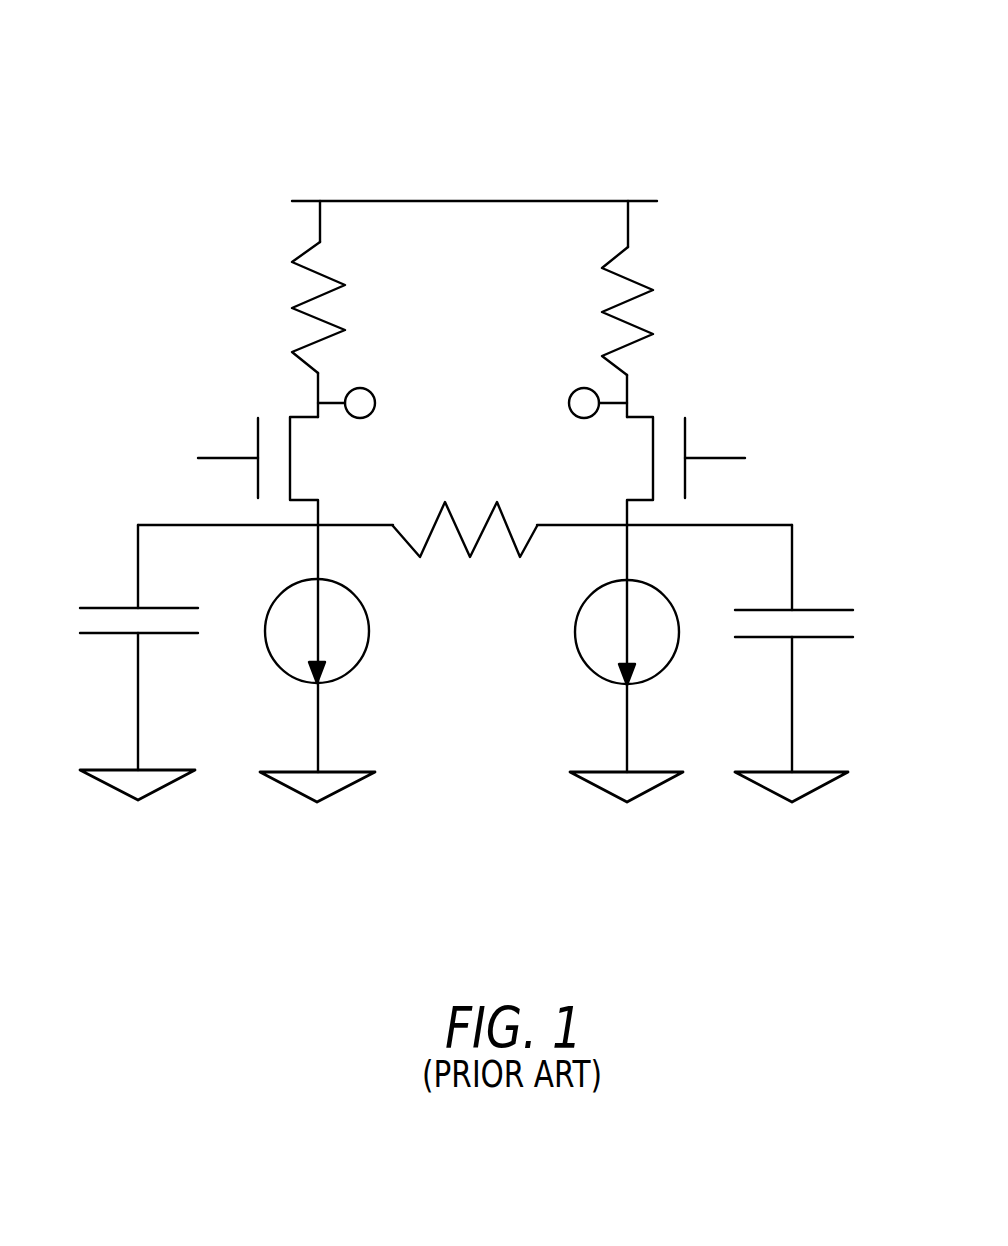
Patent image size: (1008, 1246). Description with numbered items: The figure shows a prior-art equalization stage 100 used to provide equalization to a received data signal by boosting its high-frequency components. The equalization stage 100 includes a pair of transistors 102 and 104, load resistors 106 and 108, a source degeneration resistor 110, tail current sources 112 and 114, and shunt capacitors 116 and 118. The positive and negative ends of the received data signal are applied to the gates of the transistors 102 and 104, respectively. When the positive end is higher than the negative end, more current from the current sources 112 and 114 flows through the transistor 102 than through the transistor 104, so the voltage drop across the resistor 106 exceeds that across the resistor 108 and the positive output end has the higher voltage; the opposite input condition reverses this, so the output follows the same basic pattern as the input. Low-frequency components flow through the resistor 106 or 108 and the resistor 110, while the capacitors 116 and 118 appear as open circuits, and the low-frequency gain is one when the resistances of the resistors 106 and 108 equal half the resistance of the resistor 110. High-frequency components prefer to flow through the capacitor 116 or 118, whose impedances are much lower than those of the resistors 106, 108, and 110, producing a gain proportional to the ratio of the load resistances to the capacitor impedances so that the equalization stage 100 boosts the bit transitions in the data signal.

The equalization stage 100 is at (512, 48).
The transistor 102 is at (302, 415).
The transistor 104 is at (685, 418).
The load resistor 106 is at (343, 290).
The load resistor 108 is at (645, 280).
The source degeneration resistor 110 is at (447, 500).
The tail current source 112 is at (372, 645).
The tail current source 114 is at (668, 598).
The shunt capacitor 116 is at (122, 607).
The shunt capacitor 118 is at (832, 610).